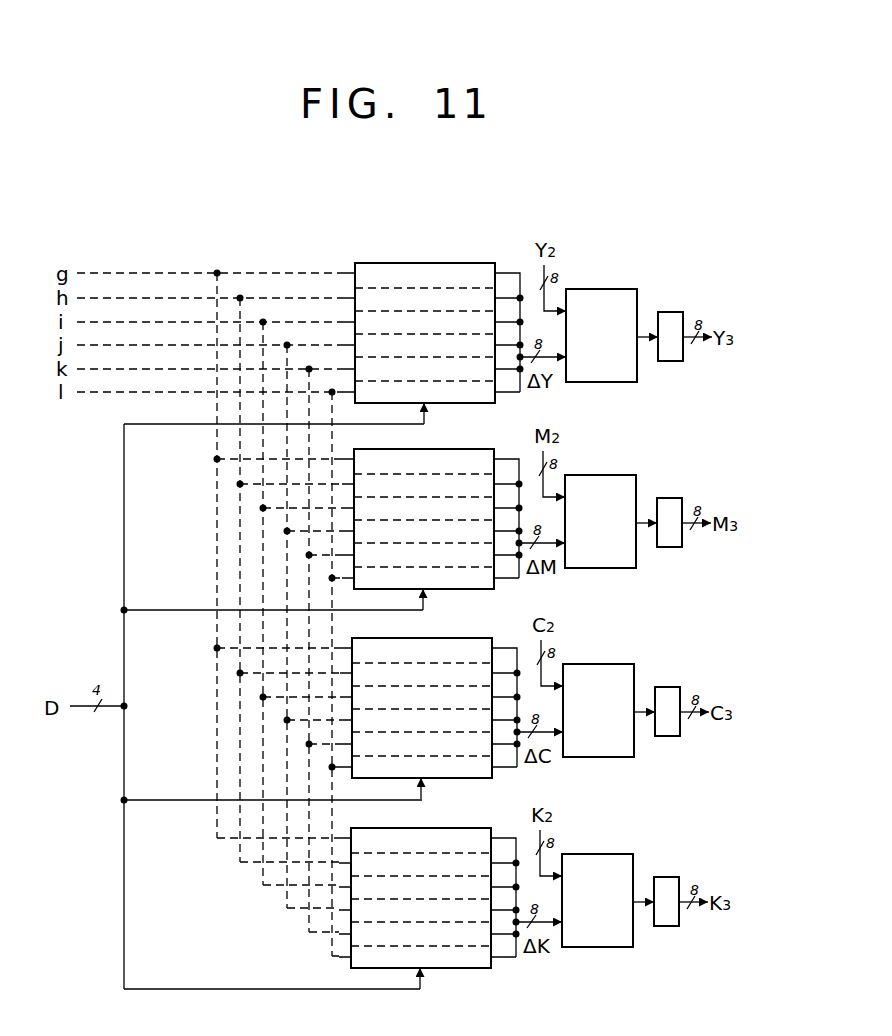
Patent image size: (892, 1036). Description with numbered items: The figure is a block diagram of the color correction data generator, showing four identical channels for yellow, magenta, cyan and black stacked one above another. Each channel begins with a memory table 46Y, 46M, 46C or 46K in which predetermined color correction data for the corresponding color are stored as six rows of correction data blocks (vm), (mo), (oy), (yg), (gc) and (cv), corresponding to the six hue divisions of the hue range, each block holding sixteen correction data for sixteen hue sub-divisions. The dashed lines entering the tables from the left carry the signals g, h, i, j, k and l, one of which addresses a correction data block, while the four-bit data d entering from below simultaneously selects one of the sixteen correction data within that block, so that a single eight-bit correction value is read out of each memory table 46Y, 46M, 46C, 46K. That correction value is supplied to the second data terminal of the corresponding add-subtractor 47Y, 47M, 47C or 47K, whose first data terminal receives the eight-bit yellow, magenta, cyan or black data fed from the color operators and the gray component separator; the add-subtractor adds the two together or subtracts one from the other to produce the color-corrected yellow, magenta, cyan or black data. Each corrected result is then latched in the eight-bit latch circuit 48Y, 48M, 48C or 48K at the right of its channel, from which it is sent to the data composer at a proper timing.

The memory table 46Y is at (484, 263).
The memory table 46M is at (432, 497).
The memory table 46C is at (429, 686).
The memory table 46K is at (428, 876).
The add-subtractor 47Y is at (622, 289).
The add-subtractor 47M is at (606, 501).
The add-subtractor 47C is at (603, 690).
The add-subtractor 47K is at (602, 880).
The latch circuit 48Y is at (672, 361).
The latch circuit 48M is at (679, 540).
The latch circuit 48C is at (676, 729).
The latch circuit 48K is at (675, 919).